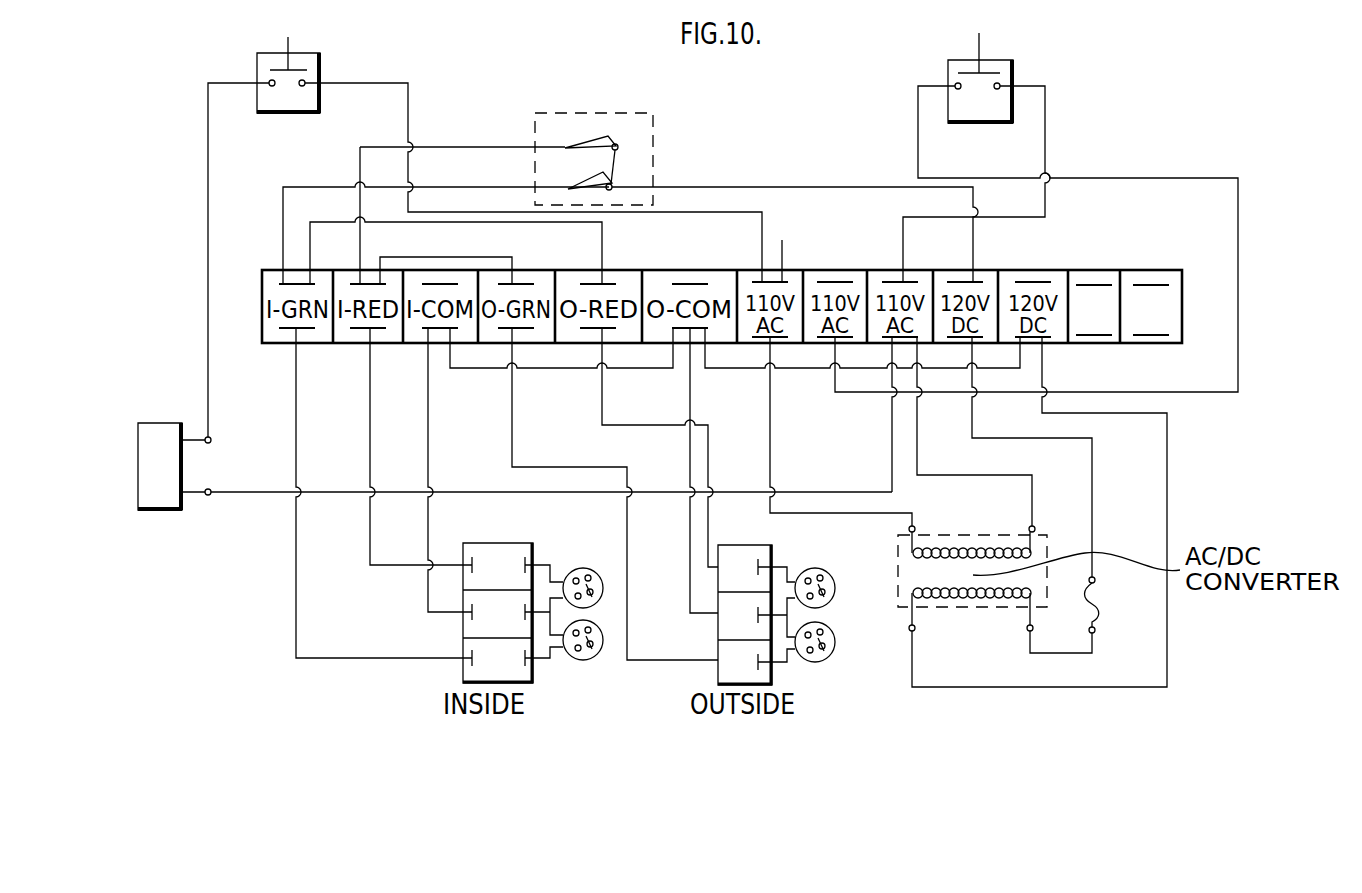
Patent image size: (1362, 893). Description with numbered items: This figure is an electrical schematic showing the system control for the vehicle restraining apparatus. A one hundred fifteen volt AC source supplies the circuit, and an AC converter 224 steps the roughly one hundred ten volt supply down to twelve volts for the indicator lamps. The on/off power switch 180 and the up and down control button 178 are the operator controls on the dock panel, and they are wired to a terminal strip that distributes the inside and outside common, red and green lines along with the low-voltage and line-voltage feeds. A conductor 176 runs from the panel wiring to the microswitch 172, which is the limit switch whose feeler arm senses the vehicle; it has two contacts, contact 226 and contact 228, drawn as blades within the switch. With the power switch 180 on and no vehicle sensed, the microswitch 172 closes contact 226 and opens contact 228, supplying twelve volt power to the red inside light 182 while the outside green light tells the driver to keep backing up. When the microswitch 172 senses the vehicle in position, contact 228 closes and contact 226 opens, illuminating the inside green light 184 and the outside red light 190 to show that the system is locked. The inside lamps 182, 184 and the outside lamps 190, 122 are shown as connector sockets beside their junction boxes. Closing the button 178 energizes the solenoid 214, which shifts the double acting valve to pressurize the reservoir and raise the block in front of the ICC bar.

The outside connector socket 122 is at (833, 656).
The microswitch 172 is at (655, 135).
The conductor 176 is at (434, 185).
The up and down control button 178 is at (320, 55).
The on/off switch 180 is at (1013, 70).
The red light 182 is at (598, 580).
The green light 184 is at (604, 656).
The red light 190 is at (828, 574).
The solenoid 214 is at (165, 466).
The AC converter 224 is at (1047, 548).
The contact 226 is at (590, 133).
The contact 228 is at (566, 186).